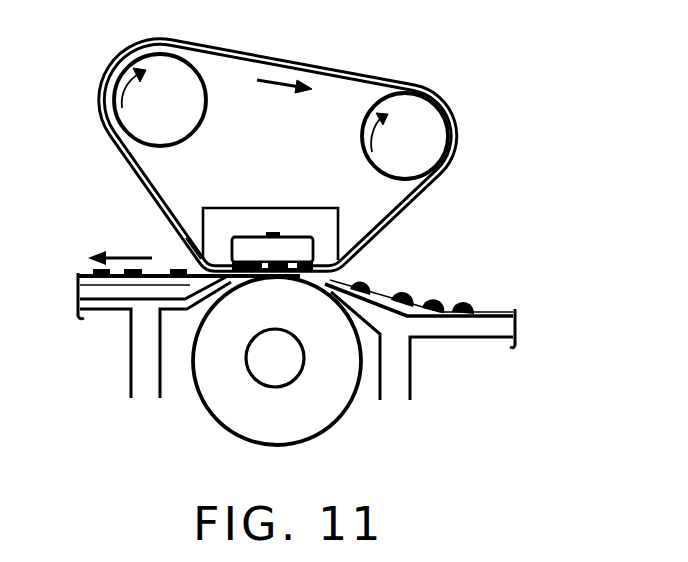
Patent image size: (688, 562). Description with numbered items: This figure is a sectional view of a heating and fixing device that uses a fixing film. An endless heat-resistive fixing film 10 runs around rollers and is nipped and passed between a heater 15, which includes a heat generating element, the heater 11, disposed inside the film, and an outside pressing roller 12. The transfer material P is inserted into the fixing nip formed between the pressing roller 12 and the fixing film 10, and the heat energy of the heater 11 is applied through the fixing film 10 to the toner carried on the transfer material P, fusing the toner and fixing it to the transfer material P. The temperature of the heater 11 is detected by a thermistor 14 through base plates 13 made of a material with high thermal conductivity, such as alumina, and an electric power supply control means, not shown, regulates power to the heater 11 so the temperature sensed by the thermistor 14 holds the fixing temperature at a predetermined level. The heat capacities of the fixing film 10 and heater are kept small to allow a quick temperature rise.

The fixing film 10 is at (345, 72).
The heater 11 is at (268, 236).
The pressing roller 12 is at (318, 407).
The base plates 13 is at (338, 258).
The thermistor 14 is at (278, 232).
The heater 15 is at (202, 249).
The transfer material P is at (493, 305).